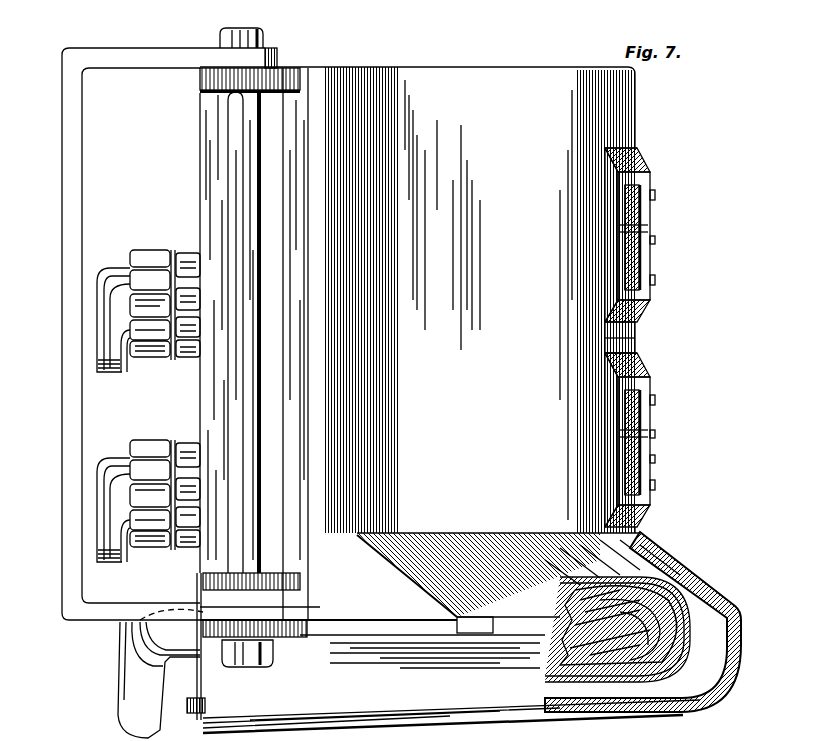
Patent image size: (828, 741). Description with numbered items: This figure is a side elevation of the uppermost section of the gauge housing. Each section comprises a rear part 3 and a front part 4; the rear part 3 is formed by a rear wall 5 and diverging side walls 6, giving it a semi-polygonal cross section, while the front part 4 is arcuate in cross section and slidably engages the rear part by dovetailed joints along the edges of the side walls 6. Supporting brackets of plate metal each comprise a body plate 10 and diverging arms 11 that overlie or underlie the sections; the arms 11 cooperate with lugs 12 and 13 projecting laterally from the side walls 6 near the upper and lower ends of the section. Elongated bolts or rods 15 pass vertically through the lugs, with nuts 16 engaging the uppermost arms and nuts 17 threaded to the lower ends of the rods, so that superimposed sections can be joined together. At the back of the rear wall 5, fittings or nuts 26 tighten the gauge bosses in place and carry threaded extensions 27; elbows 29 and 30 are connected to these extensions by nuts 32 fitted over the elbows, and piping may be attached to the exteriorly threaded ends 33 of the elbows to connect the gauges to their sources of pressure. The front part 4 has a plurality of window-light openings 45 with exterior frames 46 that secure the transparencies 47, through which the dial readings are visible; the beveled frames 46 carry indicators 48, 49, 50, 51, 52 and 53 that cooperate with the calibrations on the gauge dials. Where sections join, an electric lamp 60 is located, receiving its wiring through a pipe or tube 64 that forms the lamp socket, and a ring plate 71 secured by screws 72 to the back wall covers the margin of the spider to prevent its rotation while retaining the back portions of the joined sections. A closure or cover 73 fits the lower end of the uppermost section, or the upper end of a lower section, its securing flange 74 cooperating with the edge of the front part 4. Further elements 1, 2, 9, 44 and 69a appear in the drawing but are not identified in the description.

The frame edge portion 1 is at (606, 340).
The frame side member 2 is at (636, 128).
The rear part 3 is at (290, 344).
The front part 4 is at (481, 300).
The rear wall 5 is at (200, 208).
The diverging side walls 6 is at (294, 344).
The casing 9 is at (68, 432).
The body plate 10 is at (73, 235).
The diverging arms 11 is at (177, 60).
The lugs 12 is at (258, 82).
The lugs 13 is at (265, 590).
The elongated bolts or rods 15 is at (250, 312).
The nuts 16 is at (263, 52).
The nuts 17 is at (273, 657).
The fittings 26 is at (192, 278).
The threaded extensions 27 is at (190, 265).
The elbow 29 is at (100, 282).
The elbow 30 is at (112, 332).
The nuts 32 is at (140, 262).
The exteriorly threaded ends 33 is at (106, 374).
The frame top 44 is at (550, 64).
The window-light openings 45 is at (646, 218).
The exterior frames 46 is at (650, 170).
The transparencies 47 is at (648, 258).
The indicator 48 is at (655, 195).
The indicator 49 is at (655, 282).
The indicator 50 is at (655, 402).
The indicator 51 is at (655, 434).
The indicator 52 is at (655, 458).
The indicator 53 is at (655, 487).
The electric lamp 60 is at (618, 625).
The pipe or tube 64 is at (140, 640).
The bumper housing 69a is at (686, 668).
The ring plate 71 is at (196, 690).
The screws 72 is at (203, 715).
The closure or cover 73 is at (435, 672).
The securing flange 74 is at (476, 622).